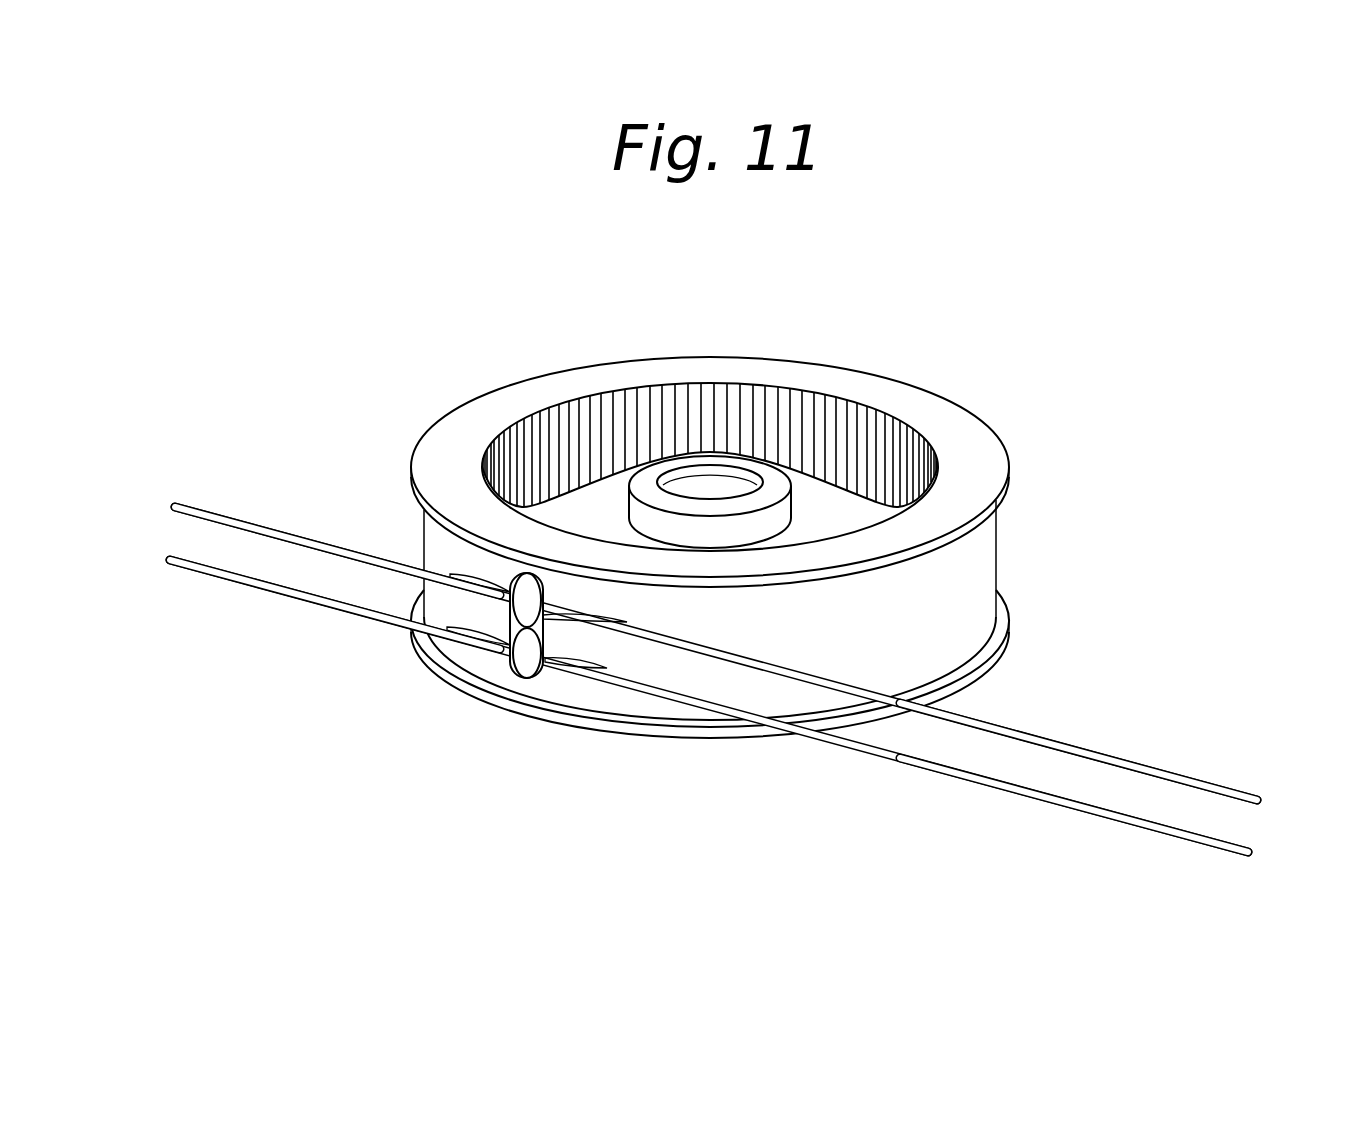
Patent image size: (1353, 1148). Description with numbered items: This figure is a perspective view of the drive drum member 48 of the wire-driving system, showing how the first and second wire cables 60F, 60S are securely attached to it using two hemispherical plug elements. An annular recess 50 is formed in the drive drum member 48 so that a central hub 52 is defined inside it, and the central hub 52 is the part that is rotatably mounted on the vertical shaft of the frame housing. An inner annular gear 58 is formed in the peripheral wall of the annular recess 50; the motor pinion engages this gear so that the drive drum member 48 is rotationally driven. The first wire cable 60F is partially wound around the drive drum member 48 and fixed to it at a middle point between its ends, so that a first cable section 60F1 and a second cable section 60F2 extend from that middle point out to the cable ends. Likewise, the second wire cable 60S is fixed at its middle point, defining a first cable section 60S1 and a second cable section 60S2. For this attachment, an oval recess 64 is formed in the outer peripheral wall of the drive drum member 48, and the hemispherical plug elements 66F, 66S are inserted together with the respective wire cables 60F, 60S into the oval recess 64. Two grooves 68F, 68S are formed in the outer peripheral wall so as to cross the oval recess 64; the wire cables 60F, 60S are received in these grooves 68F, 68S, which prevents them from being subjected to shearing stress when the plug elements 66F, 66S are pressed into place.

The drive drum member 48 is at (1005, 547).
The annular recess 50 is at (840, 527).
The central hub 52 is at (776, 476).
The inner annular gear 58 is at (702, 423).
The oval recess 64 is at (510, 636).
The hemispherical plug element 66F is at (525, 597).
The hemispherical plug element 66S is at (522, 657).
The groove 68F is at (572, 628).
The groove 68S is at (550, 677).
The first wire cable 60F is at (1160, 762).
The second wire cable 60S is at (1128, 826).
The first cable section 60F1 is at (317, 537).
The second cable section 60F2 is at (1023, 727).
The first cable section 60S1 is at (294, 598).
The second cable section 60S2 is at (990, 795).